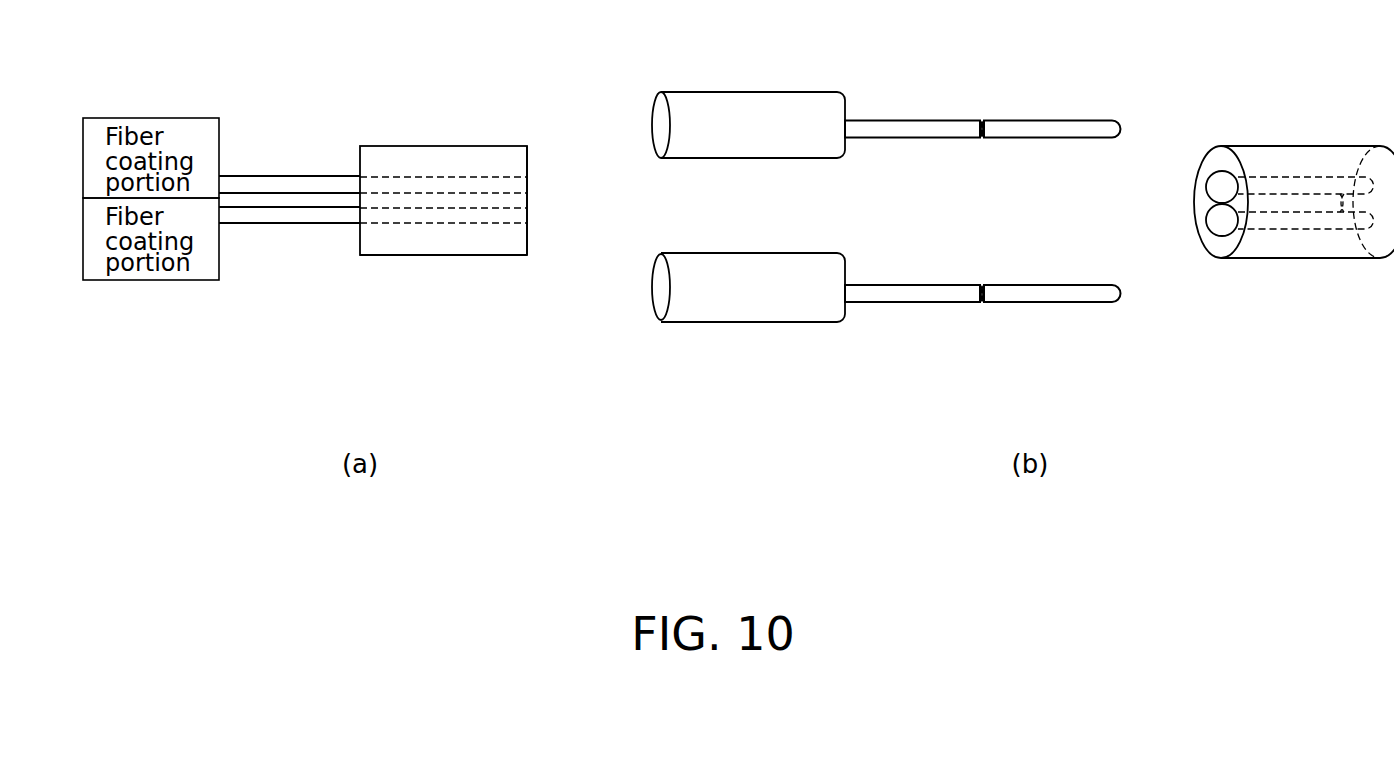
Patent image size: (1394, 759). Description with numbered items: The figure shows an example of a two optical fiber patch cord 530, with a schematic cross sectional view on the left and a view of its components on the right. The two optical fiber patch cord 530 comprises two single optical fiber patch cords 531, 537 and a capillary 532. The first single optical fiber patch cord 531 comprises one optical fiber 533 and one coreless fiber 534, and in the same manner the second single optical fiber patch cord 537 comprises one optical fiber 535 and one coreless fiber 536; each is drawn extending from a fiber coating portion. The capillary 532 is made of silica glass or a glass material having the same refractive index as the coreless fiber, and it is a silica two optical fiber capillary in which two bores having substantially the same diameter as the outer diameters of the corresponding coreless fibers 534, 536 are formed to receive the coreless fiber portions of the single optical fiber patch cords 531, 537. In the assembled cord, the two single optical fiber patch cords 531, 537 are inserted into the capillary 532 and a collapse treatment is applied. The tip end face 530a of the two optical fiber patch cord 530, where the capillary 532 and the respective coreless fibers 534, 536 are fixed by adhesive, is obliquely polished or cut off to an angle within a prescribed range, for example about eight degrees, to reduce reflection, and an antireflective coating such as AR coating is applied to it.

The two optical fiber patch cord 530 is at (431, 128).
The tip end face 530a is at (530, 241).
The single optical fiber patch cord 531 is at (936, 108).
The capillary 532 is at (395, 257).
The optical fiber 533 is at (282, 174).
The coreless fiber 534 is at (497, 176).
The optical fiber 535 is at (281, 225).
The coreless fiber 536 is at (497, 225).
The single optical fiber patch cord 537 is at (857, 345).